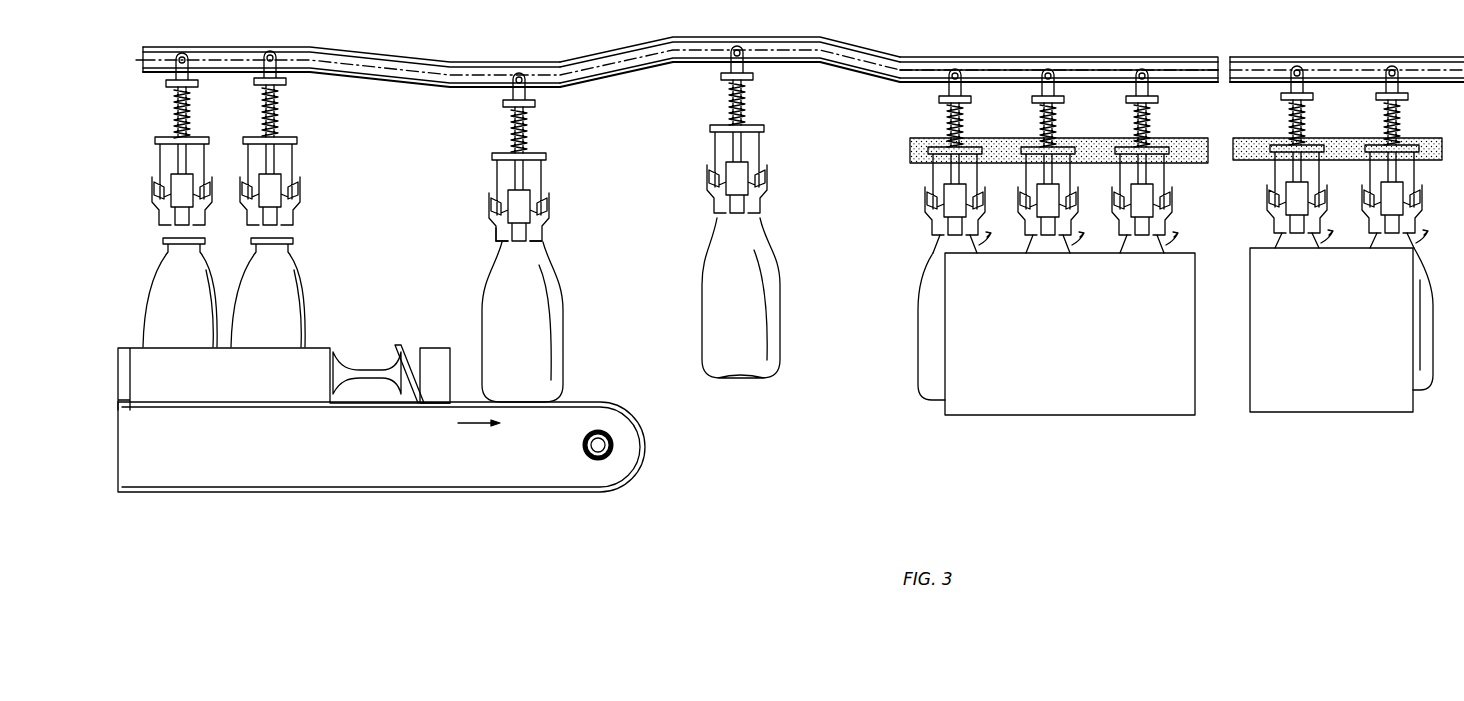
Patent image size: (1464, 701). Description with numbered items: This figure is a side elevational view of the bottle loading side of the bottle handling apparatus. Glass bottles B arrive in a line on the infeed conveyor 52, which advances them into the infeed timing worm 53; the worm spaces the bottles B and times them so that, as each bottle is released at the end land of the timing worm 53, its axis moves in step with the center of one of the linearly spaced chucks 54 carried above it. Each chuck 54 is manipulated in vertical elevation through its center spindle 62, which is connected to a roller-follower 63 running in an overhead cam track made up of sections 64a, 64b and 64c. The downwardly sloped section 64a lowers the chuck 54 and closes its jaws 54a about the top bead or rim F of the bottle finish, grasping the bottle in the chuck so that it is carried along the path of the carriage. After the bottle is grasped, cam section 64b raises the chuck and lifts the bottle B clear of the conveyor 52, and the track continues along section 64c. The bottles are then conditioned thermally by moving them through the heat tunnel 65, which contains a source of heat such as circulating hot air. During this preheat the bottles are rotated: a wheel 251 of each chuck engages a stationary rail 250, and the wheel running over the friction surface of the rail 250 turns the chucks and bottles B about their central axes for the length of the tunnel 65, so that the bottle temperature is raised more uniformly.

The infeed conveyor 52 is at (618, 405).
The infeed timing worm 53 is at (358, 360).
The chuck 54 is at (308, 143).
The jaws 54a is at (532, 250).
The center spindle 62 is at (286, 106).
The roller-follower 63 is at (240, 50).
The downwardly sloped section of the cam track 64a is at (417, 63).
The cam section 64b is at (613, 62).
The overhead rail section 64c is at (1082, 66).
The heat tunnel 65 is at (1072, 337).
The stationary rail 250 is at (1178, 140).
The wheel 251 is at (1288, 150).
The bottle B is at (182, 333).
The top bead or rim of the bottle finish F is at (496, 232).